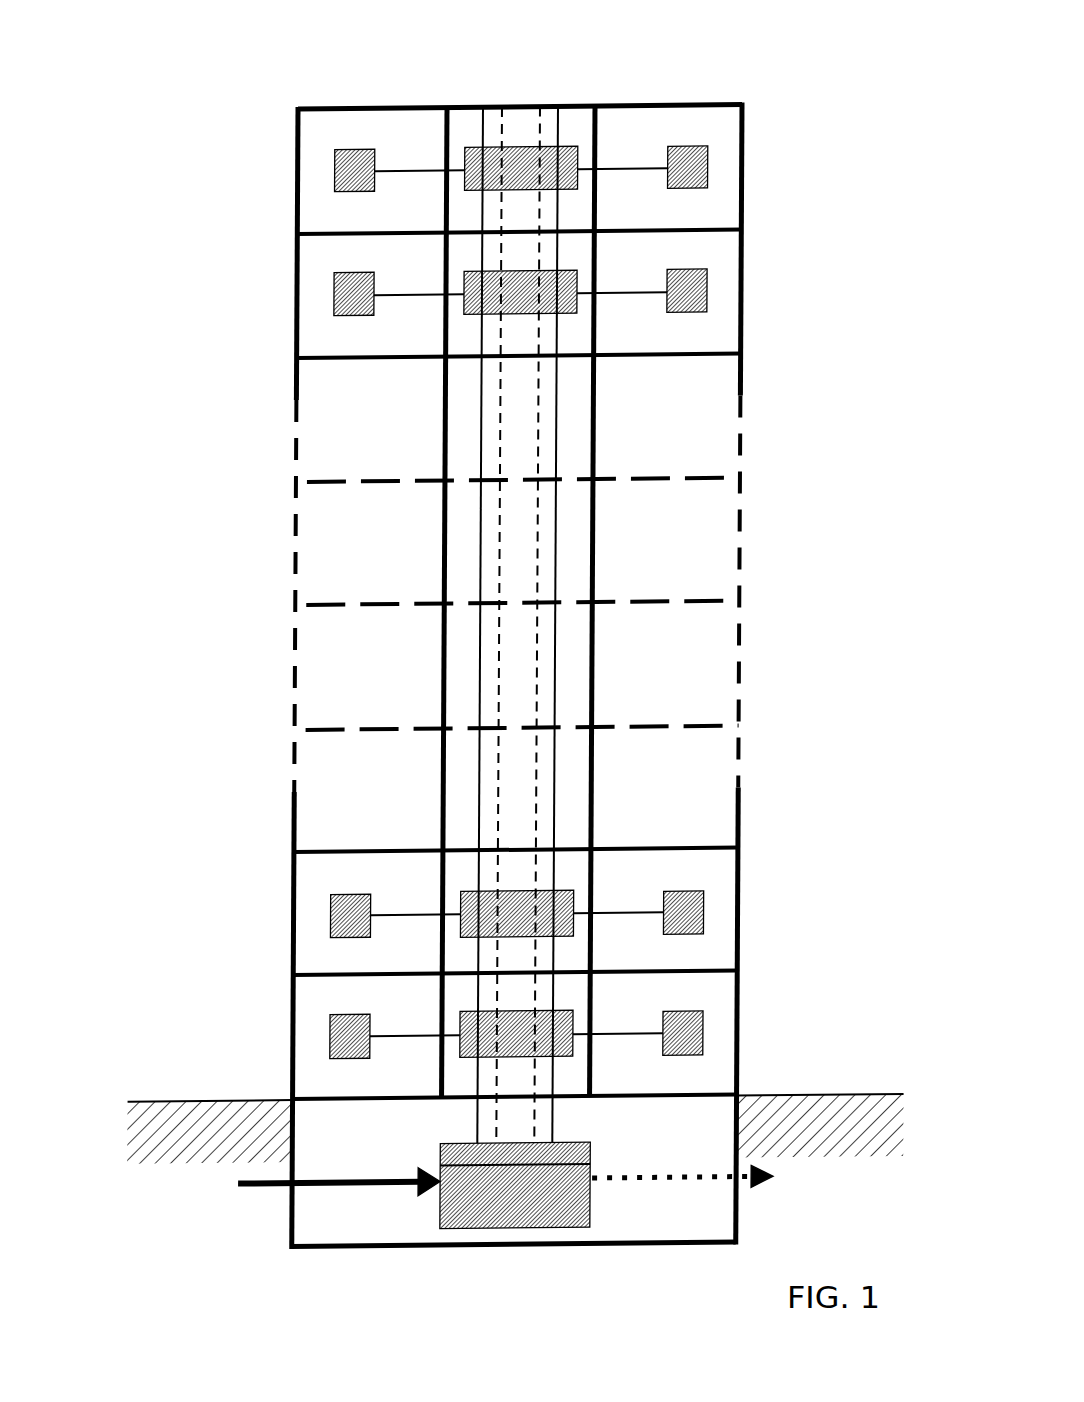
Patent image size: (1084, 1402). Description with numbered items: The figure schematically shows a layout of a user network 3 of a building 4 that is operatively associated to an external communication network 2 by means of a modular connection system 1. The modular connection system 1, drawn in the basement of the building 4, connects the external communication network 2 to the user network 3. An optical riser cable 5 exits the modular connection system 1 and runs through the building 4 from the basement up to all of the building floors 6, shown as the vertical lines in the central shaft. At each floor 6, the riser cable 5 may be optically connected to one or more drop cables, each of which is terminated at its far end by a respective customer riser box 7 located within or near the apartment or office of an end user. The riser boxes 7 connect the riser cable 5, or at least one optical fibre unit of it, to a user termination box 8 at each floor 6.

The modular connection system 1 is at (597, 1150).
The external communication network 2 is at (263, 1203).
The user network 3 is at (645, 868).
The building 4 is at (252, 115).
The riser cable 5 is at (498, 382).
The floor 6 is at (287, 180).
The riser box 7 is at (460, 1030).
The user termination box 8 is at (708, 913).